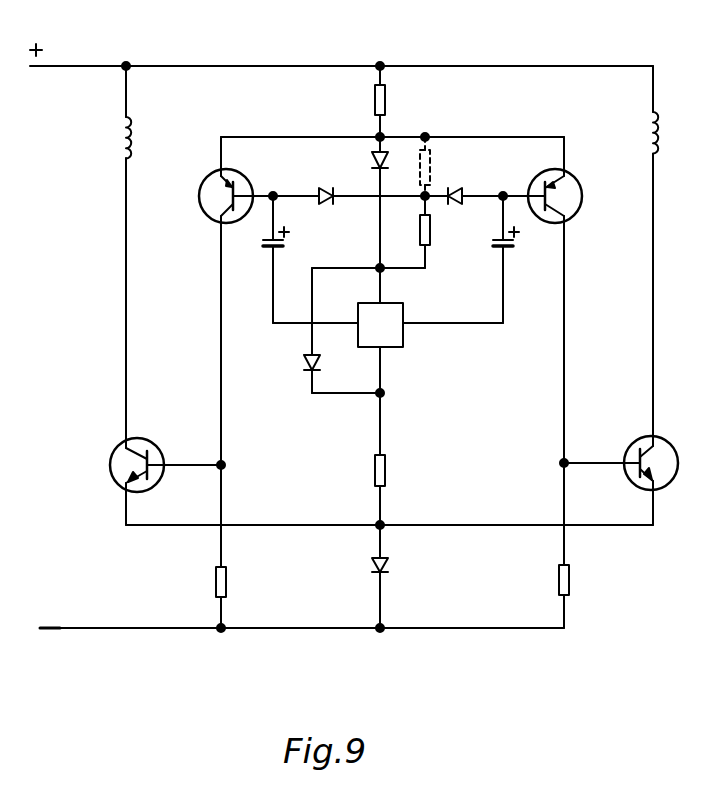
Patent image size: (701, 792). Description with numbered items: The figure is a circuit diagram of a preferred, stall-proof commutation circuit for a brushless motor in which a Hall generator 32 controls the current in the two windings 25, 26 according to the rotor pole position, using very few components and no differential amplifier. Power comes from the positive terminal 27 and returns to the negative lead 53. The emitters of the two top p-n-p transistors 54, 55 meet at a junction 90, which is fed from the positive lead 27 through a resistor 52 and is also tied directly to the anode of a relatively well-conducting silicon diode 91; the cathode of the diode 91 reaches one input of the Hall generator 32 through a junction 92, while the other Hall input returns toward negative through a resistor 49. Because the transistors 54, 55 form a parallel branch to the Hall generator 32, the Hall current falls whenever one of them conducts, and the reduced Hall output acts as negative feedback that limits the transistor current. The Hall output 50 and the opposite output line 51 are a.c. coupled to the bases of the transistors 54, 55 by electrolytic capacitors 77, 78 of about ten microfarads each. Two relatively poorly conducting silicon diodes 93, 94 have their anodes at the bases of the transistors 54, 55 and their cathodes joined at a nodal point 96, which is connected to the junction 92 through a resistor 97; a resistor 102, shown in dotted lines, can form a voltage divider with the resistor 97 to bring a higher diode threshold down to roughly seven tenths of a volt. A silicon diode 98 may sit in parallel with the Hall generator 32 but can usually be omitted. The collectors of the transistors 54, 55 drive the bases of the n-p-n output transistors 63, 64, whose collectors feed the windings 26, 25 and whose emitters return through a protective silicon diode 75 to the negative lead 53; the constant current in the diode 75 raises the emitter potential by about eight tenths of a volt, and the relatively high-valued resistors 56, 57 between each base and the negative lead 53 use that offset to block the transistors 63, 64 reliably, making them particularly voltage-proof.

The positive terminal 27 is at (78, 66).
The winding 26 is at (134, 132).
The winding 25 is at (645, 128).
The resistor 52 is at (373, 98).
The junction 90 is at (384, 137).
The resistor 102 is at (430, 150).
The silicon diode 91 is at (372, 165).
The silicon diode 93 is at (326, 186).
The silicon diode 94 is at (455, 188).
The nodal point 96 is at (421, 200).
The resistor 97 is at (431, 233).
The junction 92 is at (376, 265).
The p-n-p transistor 54 is at (246, 176).
The p-n-p transistor 55 is at (575, 178).
The electrolytic capacitor 77 is at (262, 244).
The electrolytic capacitor 78 is at (514, 244).
The Hall generator 32 is at (392, 306).
The output 50 is at (330, 321).
The connection line 51 is at (424, 322).
The silicon diode 98 is at (302, 364).
The resistor 49 is at (384, 468).
The protective diode 75 is at (388, 566).
The n-p-n transistor 63 is at (152, 440).
The n-p-n transistor 64 is at (648, 440).
The resistor 56 is at (226, 573).
The resistor 57 is at (569, 572).
The negative lead 53 is at (95, 628).